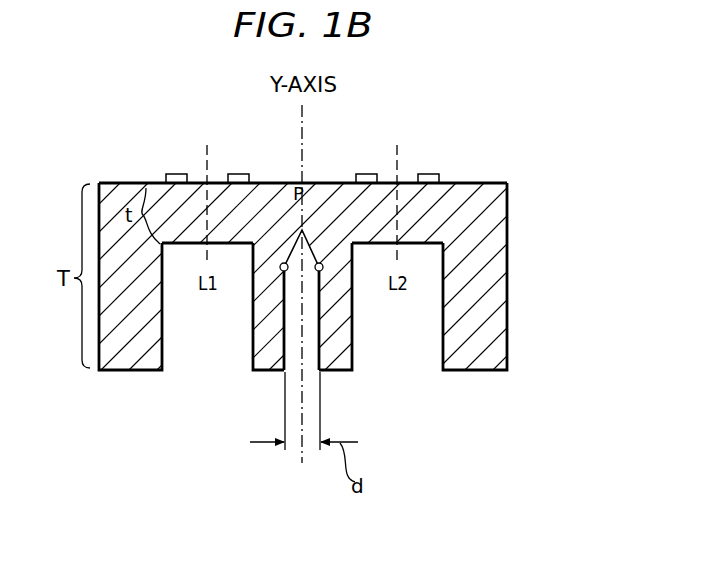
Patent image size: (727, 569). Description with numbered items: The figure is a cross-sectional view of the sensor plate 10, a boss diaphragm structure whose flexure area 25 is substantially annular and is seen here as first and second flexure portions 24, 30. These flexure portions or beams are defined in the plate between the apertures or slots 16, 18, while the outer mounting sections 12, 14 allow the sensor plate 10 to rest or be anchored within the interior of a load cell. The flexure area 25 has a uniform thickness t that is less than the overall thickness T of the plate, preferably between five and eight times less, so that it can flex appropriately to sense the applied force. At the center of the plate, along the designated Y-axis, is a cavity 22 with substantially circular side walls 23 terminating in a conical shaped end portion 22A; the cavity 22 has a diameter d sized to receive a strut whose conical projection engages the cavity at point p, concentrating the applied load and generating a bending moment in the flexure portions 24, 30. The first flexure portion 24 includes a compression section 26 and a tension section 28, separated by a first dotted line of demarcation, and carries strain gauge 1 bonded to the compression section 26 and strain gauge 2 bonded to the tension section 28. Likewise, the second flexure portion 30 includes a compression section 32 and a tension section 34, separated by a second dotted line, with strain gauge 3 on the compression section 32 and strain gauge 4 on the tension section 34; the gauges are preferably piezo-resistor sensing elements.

The sensor plate 10 is at (525, 134).
The mounting section 12 is at (122, 352).
The mounting section 14 is at (492, 358).
The slot 16 is at (187, 350).
The slot 18 is at (380, 352).
The cavity 22 is at (296, 350).
The conical shaped end portion 22A is at (298, 229).
The circular side walls 23 is at (323, 350).
The first flexure portion 24 is at (197, 183).
The second flexure portion 30 is at (399, 148).
The flexure area 25 is at (150, 197).
The compression section 26 is at (194, 223).
The tension section 28 is at (243, 223).
The tension section 34 is at (384, 223).
The compression section 32 is at (433, 223).
The strain gauge 1 is at (168, 175).
The strain gauge 2 is at (236, 173).
The strain gauge 3 is at (363, 173).
The strain gauge 4 is at (429, 173).